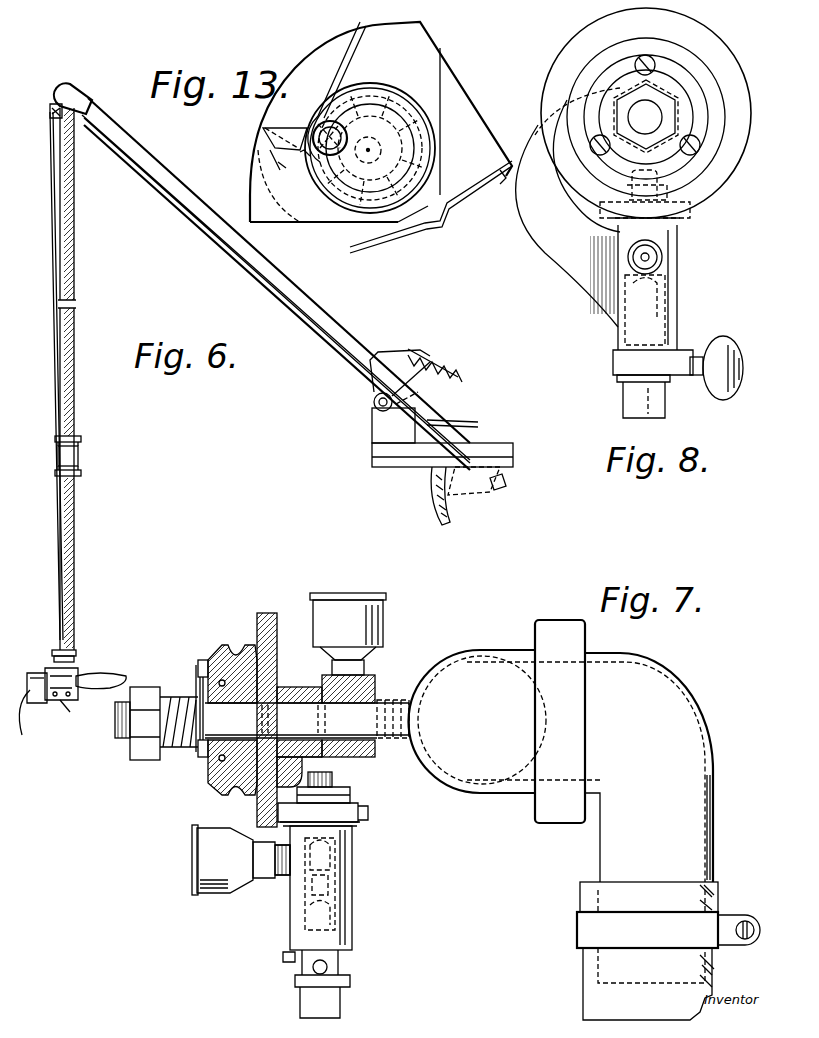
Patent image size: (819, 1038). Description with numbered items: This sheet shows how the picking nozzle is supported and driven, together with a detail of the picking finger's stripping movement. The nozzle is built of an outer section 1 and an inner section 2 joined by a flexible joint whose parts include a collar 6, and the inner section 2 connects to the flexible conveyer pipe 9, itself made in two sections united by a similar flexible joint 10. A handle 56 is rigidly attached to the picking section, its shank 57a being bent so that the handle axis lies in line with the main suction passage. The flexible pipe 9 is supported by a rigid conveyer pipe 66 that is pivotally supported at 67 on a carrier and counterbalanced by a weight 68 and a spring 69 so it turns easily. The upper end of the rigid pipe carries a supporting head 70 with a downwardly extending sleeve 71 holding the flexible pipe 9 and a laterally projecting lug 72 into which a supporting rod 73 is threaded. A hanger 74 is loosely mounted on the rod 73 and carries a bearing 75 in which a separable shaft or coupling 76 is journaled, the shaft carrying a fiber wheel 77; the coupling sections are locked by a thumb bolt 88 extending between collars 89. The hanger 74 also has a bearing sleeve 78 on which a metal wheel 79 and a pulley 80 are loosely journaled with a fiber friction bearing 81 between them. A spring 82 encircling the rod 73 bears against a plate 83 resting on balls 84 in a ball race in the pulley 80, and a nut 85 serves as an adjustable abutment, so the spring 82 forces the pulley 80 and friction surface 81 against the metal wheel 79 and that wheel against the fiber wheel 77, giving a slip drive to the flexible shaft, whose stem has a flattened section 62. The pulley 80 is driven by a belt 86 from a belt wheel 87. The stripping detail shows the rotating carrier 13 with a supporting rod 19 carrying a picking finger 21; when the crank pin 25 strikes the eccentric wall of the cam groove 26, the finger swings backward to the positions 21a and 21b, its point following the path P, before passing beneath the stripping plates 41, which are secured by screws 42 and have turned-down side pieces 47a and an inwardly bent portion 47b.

In FIG. 6, the outer section 1 is at (20, 722).
In FIG. 6, the inner section 2 is at (78, 668).
In FIG. 6, the collar 6 is at (45, 674).
In FIG. 6, the flexible conveyer pipe 9 is at (74, 400).
In FIG. 7, the flexible conveyer pipe 9 is at (582, 968).
In FIG. 6, the flexible joint 10 is at (82, 455).
In FIG. 13, the rotating carrier 13 is at (345, 198).
In FIG. 13, the supporting rod 19 is at (324, 122).
In FIG. 13, the picking finger 21 is at (281, 130).
In FIG. 13, the picking finger position 21a is at (300, 150).
In FIG. 13, the picking finger position 21b is at (300, 152).
In FIG. 13, the crank pin 25 is at (340, 185).
In FIG. 13, the cam groove 26 is at (375, 198).
In FIG. 13, the stripping plates 41 is at (370, 36).
In FIG. 13, the screws 42 is at (460, 190).
In FIG. 13, the side pieces 47a is at (455, 215).
In FIG. 13, the inwardly bent portion 47b is at (440, 230).
In FIG. 6, the handle 56 is at (104, 679).
In FIG. 6, the handle shank 57a is at (75, 713).
In FIG. 6, the flattened section 62 is at (56, 562).
In FIG. 6, the rigid conveyer pipe 66 is at (263, 262).
In FIG. 6, the pivotal support 67 is at (372, 404).
In FIG. 6, the weight 68 is at (474, 492).
In FIG. 6, the spring 69 is at (440, 376).
In FIG. 6, the supporting head 70 is at (68, 88).
In FIG. 7, the supporting head 70 is at (479, 668).
In FIG. 7, the sleeve 71 is at (650, 863).
In FIG. 8, the lug 72 is at (545, 247).
In FIG. 7, the lug 72 is at (396, 748).
In FIG. 8, the supporting rod 73 is at (652, 116).
In FIG. 7, the supporting rod 73 is at (352, 722).
In FIG. 7, the hanger 74 is at (356, 790).
In FIG. 8, the bearing 75 is at (668, 272).
In FIG. 7, the bearing 75 is at (350, 912).
In FIG. 7, the shaft or coupling 76 is at (292, 958).
In FIG. 8, the fiber wheel 77 is at (683, 210).
In FIG. 7, the fiber wheel 77 is at (352, 818).
In FIG. 7, the bearing sleeve 78 is at (295, 690).
In FIG. 8, the metal wheel 79 is at (744, 146).
In FIG. 7, the metal wheel 79 is at (277, 643).
In FIG. 7, the pulley 80 is at (228, 645).
In FIG. 7, the fiber friction bearing 81 is at (262, 645).
In FIG. 7, the spring 82 is at (172, 698).
In FIG. 7, the plate 83 is at (203, 688).
In FIG. 7, the balls 84 is at (212, 667).
In FIG. 7, the nut 85 is at (150, 748).
In FIG. 6, the belt 86 is at (207, 223).
In FIG. 6, the belt wheel 87 is at (383, 447).
In FIG. 8, the thumb bolt 88 is at (703, 355).
In FIG. 8, the collars 89 is at (620, 372).
In FIG. 13, the path of travel P is at (317, 238).